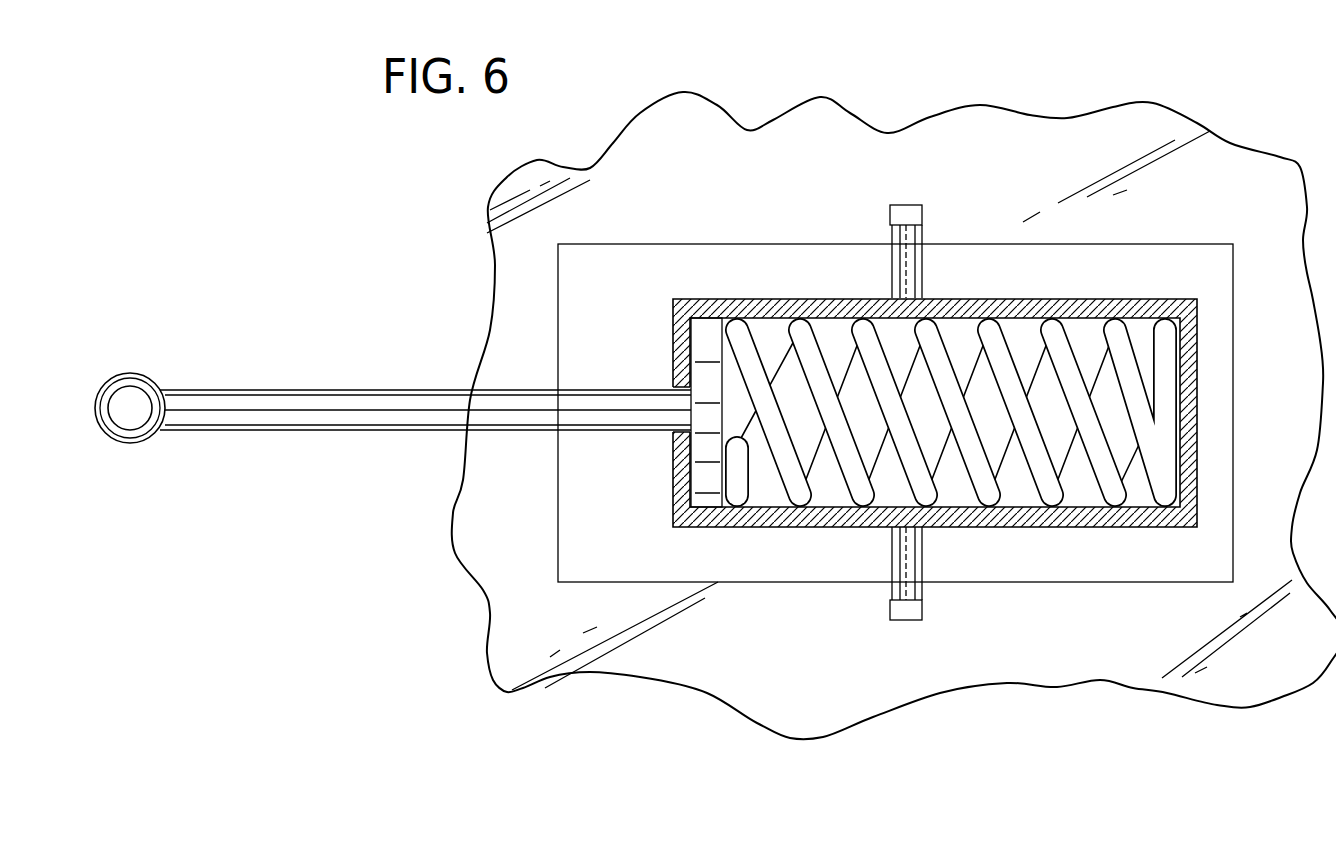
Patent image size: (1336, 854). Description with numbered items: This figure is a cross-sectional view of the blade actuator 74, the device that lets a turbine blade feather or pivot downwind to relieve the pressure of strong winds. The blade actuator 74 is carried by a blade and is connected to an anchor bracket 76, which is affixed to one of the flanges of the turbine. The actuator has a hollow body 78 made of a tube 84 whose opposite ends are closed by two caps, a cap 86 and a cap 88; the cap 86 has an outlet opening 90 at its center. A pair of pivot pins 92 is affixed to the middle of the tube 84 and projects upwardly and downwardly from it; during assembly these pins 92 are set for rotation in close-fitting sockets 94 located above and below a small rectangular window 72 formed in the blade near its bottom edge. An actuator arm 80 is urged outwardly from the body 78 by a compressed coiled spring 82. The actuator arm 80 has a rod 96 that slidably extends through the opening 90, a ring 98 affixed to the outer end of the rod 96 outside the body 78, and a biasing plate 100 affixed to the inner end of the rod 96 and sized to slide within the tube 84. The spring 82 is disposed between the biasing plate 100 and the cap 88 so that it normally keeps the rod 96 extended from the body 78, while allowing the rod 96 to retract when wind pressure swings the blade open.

The window 72 is at (1082, 585).
The blade actuator 74 is at (484, 205).
The anchor bracket 76 is at (971, 425).
The hollow body 78 is at (1103, 287).
The actuator arm 80 is at (425, 393).
The coiled spring 82 is at (1143, 513).
The tube 84 is at (827, 518).
The cap 86 is at (673, 342).
The cap 88 is at (1195, 385).
The outlet opening 90 is at (606, 437).
The pivot pins 92 is at (917, 568).
The sockets 94 is at (905, 205).
The rod 96 is at (220, 431).
The ring 98 is at (124, 443).
The biasing plate 100 is at (710, 475).